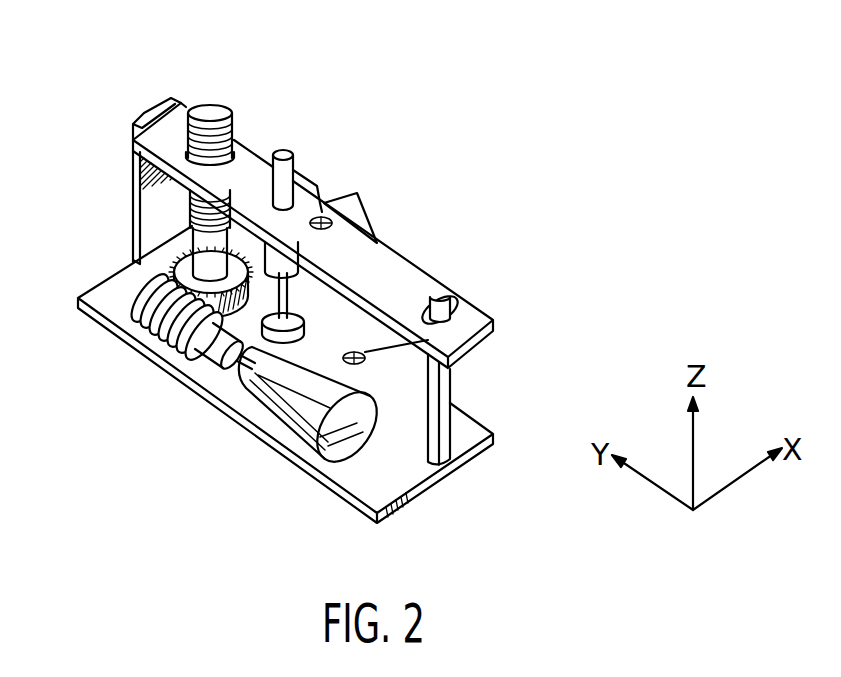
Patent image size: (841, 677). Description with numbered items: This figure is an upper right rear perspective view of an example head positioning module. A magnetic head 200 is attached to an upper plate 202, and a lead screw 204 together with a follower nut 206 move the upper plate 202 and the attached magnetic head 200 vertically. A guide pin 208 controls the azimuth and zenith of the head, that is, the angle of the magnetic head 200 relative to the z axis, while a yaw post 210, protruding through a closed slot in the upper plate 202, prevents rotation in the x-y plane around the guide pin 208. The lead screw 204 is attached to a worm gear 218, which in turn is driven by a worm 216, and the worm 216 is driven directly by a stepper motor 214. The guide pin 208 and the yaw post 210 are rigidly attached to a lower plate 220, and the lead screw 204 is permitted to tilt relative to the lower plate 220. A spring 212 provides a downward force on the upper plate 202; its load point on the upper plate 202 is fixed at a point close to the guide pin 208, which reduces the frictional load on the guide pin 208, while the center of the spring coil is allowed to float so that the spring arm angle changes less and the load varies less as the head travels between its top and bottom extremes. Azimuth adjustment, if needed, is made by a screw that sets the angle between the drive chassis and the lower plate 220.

The magnetic head 200 is at (157, 100).
The upper plate 202 is at (480, 310).
The lead screw 204 is at (212, 106).
The follower nut 206 is at (236, 152).
The guide pin 208 is at (294, 152).
The yaw post 210 is at (438, 285).
The spring 212 is at (366, 216).
The stepper motor 214 is at (278, 424).
The worm 216 is at (158, 334).
The worm gear 218 is at (123, 272).
The lower plate 220 is at (445, 473).